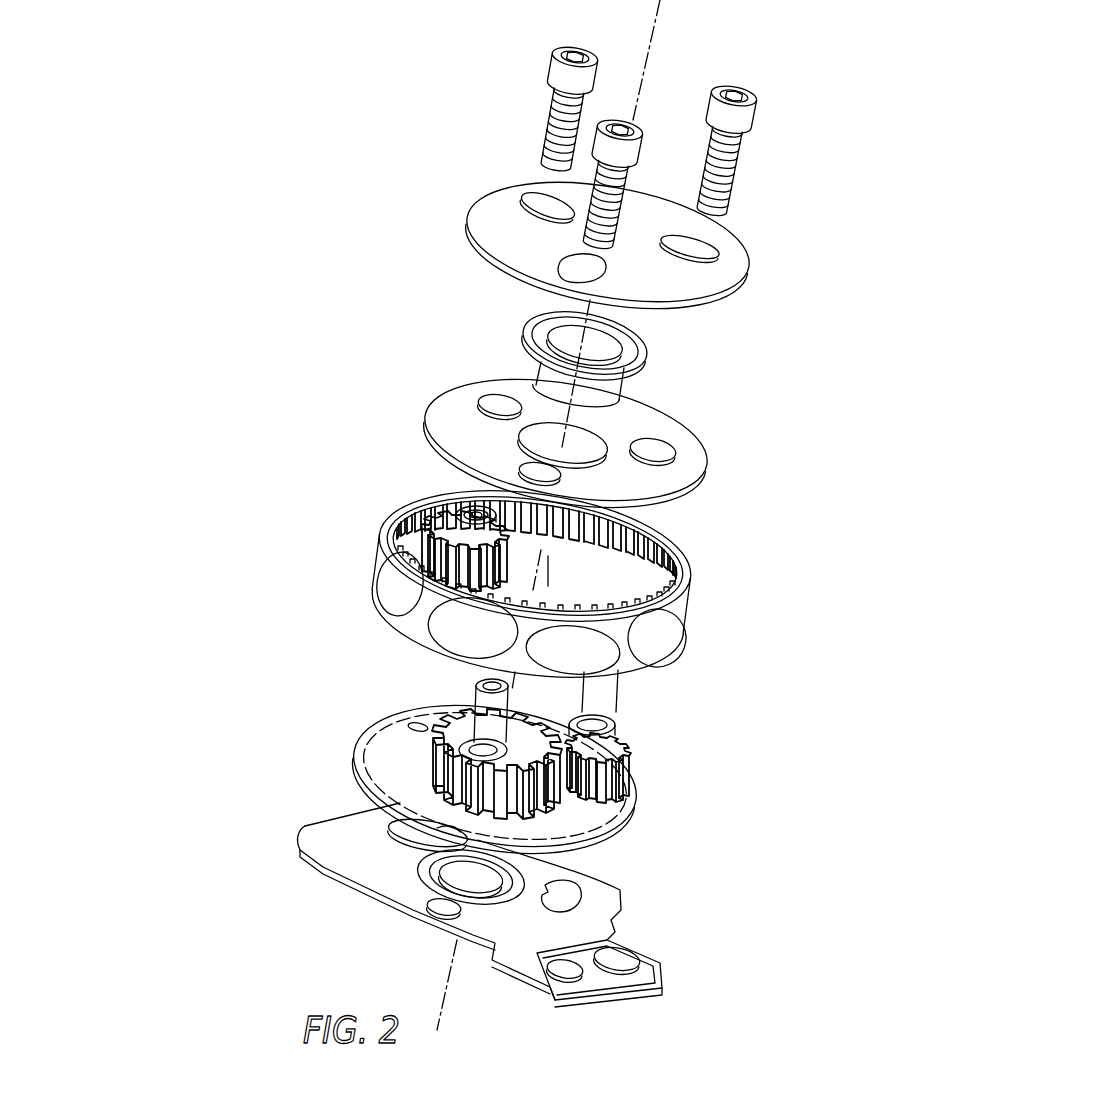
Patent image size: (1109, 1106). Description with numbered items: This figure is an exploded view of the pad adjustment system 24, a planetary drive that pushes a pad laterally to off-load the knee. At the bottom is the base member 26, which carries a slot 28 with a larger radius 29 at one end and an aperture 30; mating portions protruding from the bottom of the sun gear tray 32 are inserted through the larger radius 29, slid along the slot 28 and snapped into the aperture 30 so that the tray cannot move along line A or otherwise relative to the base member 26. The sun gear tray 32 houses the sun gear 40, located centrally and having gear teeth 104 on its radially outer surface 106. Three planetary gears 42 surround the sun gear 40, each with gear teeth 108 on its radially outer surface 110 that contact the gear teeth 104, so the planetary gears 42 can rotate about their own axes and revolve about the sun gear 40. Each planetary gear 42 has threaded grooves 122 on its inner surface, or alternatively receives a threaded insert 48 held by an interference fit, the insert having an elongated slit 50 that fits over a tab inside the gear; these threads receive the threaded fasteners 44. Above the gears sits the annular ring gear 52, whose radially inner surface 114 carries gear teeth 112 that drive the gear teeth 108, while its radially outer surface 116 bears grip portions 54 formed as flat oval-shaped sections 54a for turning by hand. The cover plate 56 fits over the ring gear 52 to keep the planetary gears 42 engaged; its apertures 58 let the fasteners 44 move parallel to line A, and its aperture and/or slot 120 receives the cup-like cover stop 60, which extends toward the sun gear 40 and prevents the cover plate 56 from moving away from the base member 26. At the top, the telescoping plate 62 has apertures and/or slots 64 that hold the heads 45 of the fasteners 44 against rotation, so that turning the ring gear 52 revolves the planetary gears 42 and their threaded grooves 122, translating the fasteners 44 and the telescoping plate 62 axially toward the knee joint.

The line A is at (660, 25).
The pad adjustment system 24 is at (360, 292).
The base member 26 is at (468, 899).
The slot 28 is at (403, 826).
The larger radius 29 is at (437, 828).
The aperture 30 is at (436, 912).
The sun gear tray 32 is at (392, 768).
The sun gear 40 is at (555, 812).
The planetary gear 42 is at (514, 626).
The threaded fastener 44 is at (681, 139).
The head 45 is at (740, 98).
The threaded insert 48 is at (615, 703).
The elongated slit 50 is at (475, 697).
The ring gear 52 is at (501, 584).
The grip portion 54 is at (541, 613).
The flat oval-shaped section 54a is at (392, 578).
The cover plate 56 is at (589, 426).
The aperture 58 is at (497, 403).
The cover stop 60 is at (655, 360).
The telescoping plate 62 is at (638, 221).
The aperture and/or slot 64 is at (538, 199).
The gear teeth 104 is at (447, 720).
The radially outer surface 106 is at (410, 704).
The gear teeth 108 is at (605, 765).
The radially outer surface 110 is at (612, 738).
The gear teeth 112 is at (625, 547).
The radially inner surface 114 is at (552, 554).
The radially outer surface 116 is at (418, 615).
The aperture and/or slot 120 is at (578, 447).
The threaded grooves 122 is at (456, 507).